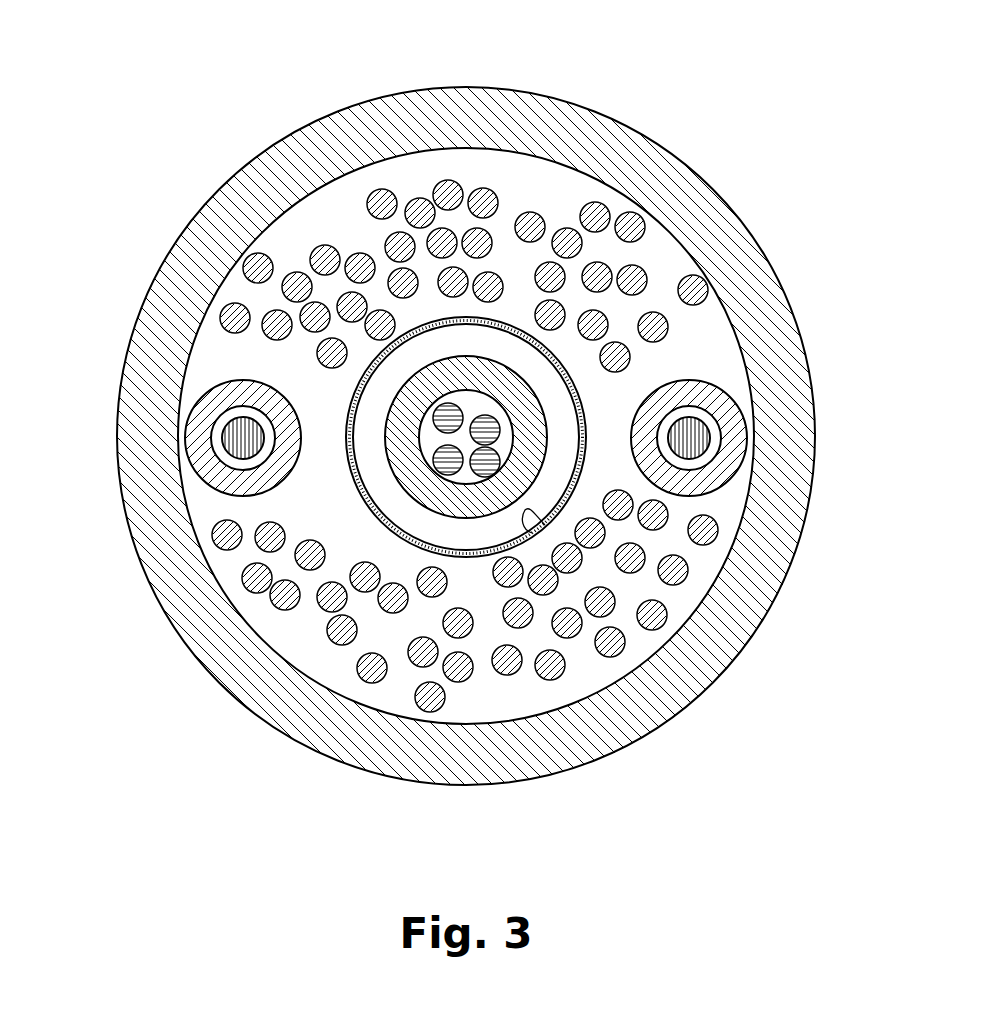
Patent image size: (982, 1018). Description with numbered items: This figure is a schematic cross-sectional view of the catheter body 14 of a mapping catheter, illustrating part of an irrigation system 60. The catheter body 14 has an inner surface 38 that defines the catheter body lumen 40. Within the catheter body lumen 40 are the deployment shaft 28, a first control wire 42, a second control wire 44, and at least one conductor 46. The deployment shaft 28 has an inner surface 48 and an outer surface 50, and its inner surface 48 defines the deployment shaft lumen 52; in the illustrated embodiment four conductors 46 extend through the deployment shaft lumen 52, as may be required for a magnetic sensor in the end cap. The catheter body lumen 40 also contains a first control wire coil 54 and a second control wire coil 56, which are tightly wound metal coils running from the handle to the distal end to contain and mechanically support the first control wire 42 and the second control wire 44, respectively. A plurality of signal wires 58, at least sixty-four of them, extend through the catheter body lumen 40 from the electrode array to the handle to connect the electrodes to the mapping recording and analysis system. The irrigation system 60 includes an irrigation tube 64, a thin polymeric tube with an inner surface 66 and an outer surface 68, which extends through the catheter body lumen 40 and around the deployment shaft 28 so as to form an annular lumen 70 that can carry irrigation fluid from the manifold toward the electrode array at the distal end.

The catheter body 14 is at (737, 208).
The deployment shaft 28 is at (383, 457).
The inner surface 38 is at (748, 333).
The catheter body lumen 40 is at (340, 227).
The first control wire 42 is at (221, 435).
The second control wire 44 is at (710, 434).
The conductor 46 is at (503, 440).
The inner surface 48 is at (387, 425).
The outer surface 50 is at (423, 433).
The deployment shaft lumen 52 is at (467, 391).
The first control wire coil 54 is at (196, 440).
The second control wire coil 56 is at (753, 442).
The signal wires 58 is at (441, 180).
The irrigation system 60 is at (468, 580).
The irrigation tube 64 is at (587, 402).
The inner surface 66 is at (545, 525).
The outer surface 68 is at (676, 493).
The annular lumen 70 is at (395, 508).